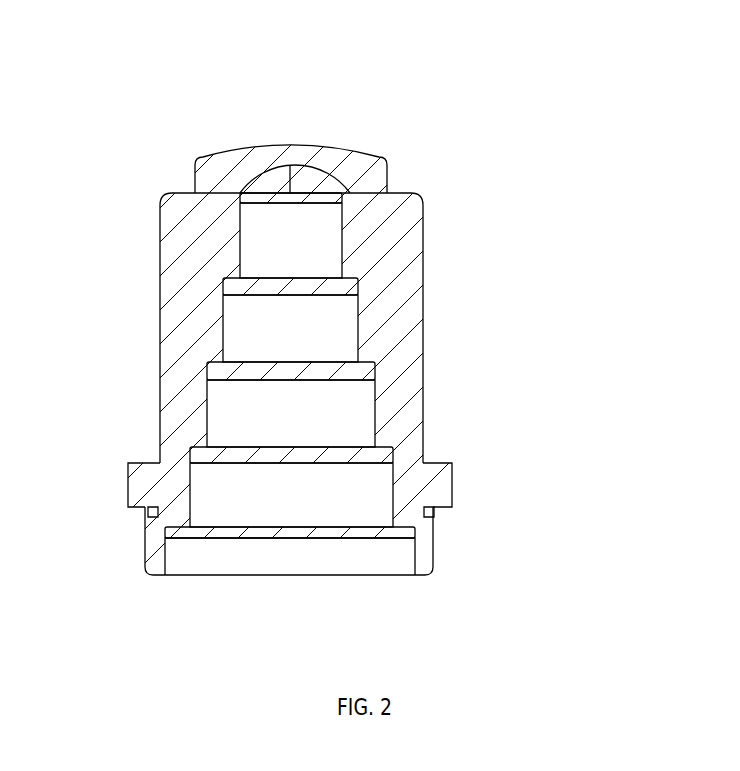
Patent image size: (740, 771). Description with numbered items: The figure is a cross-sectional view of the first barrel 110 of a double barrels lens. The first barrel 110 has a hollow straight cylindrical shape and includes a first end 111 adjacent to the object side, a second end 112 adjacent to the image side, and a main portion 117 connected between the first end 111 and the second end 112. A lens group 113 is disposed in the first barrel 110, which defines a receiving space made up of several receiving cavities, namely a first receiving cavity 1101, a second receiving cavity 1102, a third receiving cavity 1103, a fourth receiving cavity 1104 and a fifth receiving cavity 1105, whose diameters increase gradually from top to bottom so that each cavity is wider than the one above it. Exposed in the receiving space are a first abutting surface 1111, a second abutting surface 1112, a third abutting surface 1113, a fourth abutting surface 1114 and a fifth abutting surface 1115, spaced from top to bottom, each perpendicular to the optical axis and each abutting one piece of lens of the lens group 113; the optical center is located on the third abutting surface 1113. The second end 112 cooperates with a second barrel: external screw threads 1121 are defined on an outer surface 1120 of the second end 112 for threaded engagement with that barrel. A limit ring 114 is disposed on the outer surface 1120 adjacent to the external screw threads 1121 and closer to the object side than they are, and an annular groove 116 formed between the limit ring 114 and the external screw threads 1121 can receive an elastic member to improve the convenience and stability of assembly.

The first barrel 110 is at (278, 38).
The first end 111 is at (452, 211).
The main portion 117 is at (321, 383).
The lens group 113 is at (342, 431).
The limit ring 114 is at (452, 482).
The second end 112 is at (411, 532).
The annular groove 116 is at (152, 513).
The first abutting surface 1111 is at (237, 205).
The second abutting surface 1112 is at (237, 277).
The third abutting surface 1113 is at (222, 363).
The fourth abutting surface 1114 is at (200, 447).
The fifth abutting surface 1115 is at (178, 533).
The first receiving cavity 1101 is at (295, 253).
The second receiving cavity 1102 is at (282, 342).
The third receiving cavity 1103 is at (342, 432).
The fourth receiving cavity 1104 is at (330, 507).
The fifth receiving cavity 1105 is at (257, 558).
The outer surface 1120 is at (437, 520).
The external screw threads 1121 is at (437, 550).